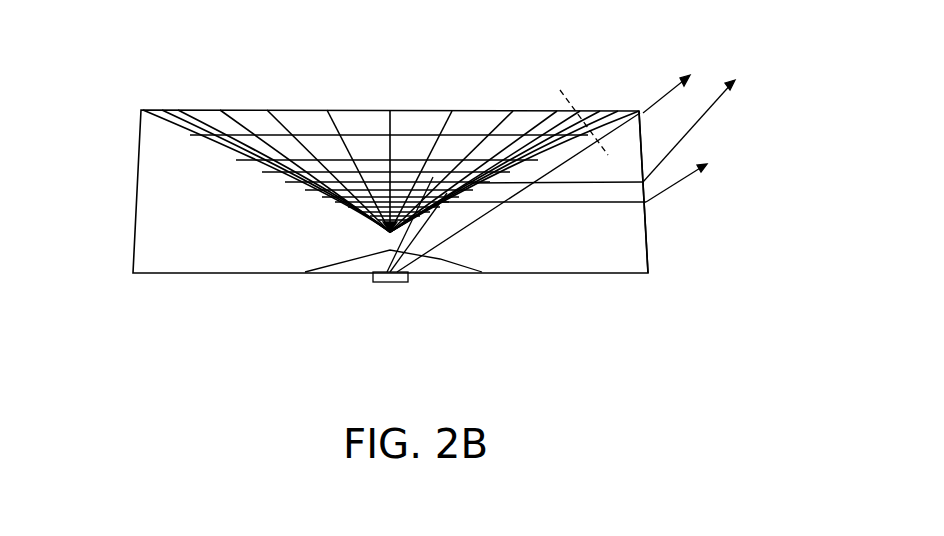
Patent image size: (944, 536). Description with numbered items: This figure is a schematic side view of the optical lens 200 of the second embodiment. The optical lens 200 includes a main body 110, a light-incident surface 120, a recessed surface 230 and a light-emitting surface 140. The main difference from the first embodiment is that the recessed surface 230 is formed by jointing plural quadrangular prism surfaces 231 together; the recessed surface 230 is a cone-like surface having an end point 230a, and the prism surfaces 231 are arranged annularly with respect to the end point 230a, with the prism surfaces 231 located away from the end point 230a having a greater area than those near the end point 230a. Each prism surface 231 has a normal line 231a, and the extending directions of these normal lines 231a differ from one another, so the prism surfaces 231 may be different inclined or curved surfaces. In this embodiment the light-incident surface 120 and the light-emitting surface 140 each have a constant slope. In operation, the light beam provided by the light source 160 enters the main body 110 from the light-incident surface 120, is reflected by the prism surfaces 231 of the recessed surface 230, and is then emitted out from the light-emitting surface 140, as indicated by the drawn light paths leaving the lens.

The optical lens 200 is at (83, 71).
The main body 110 is at (148, 202).
The light-incident surface 120 is at (448, 276).
The light-emitting surface 140 is at (648, 238).
The light source 160 is at (390, 284).
The recessed surface 230 is at (483, 120).
The end point 230a is at (389, 233).
The prism surface 231 is at (598, 125).
The normal line 231a is at (560, 90).